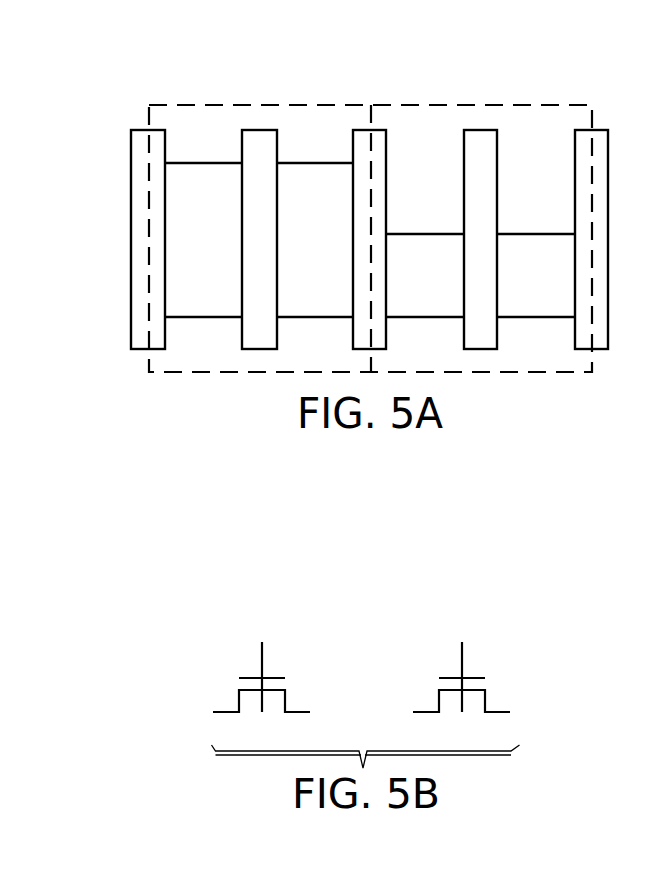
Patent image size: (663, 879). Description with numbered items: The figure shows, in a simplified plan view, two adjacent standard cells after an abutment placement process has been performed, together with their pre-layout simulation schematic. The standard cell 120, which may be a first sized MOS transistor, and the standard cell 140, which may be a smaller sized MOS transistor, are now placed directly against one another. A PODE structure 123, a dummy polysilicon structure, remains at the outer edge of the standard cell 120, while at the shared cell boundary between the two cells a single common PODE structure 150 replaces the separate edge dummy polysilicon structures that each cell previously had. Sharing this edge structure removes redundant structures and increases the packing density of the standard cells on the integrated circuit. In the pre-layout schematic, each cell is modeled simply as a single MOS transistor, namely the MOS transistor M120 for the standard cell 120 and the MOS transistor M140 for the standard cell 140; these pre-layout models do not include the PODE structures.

In FIG. 5A, the standard cell 120 is at (303, 74).
In FIG. 5A, the standard cell 140 is at (433, 74).
In FIG. 5A, the PODE structure 123 is at (131, 240).
In FIG. 5A, the common PODE structure 150 is at (386, 213).
In FIG. 5B, the MOS transistor M120 is at (270, 675).
In FIG. 5B, the MOS transistor M140 is at (470, 675).